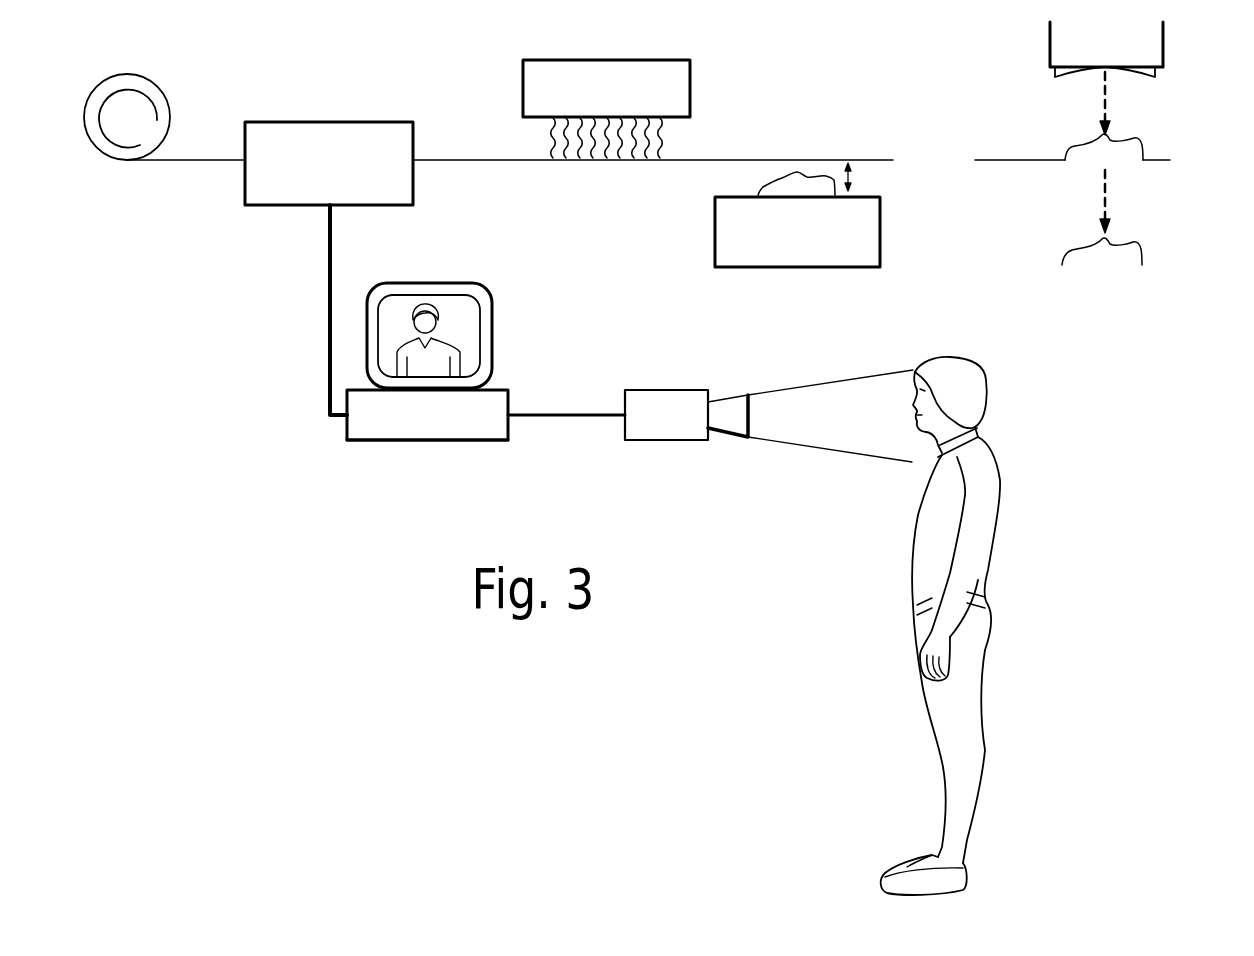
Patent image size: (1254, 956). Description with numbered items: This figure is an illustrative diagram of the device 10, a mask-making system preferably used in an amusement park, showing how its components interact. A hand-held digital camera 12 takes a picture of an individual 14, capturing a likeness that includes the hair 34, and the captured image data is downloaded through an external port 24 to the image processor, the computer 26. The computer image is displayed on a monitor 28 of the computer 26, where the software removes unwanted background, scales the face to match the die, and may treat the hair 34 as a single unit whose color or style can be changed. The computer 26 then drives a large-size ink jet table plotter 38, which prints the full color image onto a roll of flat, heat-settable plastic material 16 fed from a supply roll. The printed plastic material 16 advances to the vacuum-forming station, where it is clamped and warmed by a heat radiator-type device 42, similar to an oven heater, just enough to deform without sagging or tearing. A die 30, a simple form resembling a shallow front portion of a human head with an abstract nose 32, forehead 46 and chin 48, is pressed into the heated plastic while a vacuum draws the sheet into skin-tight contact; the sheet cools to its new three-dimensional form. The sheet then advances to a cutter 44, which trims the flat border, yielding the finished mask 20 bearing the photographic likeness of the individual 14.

The device 10 is at (253, 367).
The digital camera 12 is at (672, 400).
The individual 14 is at (981, 608).
The plastic material 16 is at (163, 93).
The mask 20 is at (1142, 242).
The external port 24 is at (510, 412).
The computer 26 is at (402, 435).
The monitor 28 is at (487, 288).
The die 30 is at (778, 175).
The nose 32 is at (800, 167).
The hair 34 is at (975, 372).
The ink jet table plotter 38 is at (380, 122).
The heat radiator-type device 42 is at (692, 78).
The cutter 44 is at (1165, 50).
The forehead 46 is at (763, 187).
The chin 48 is at (852, 182).